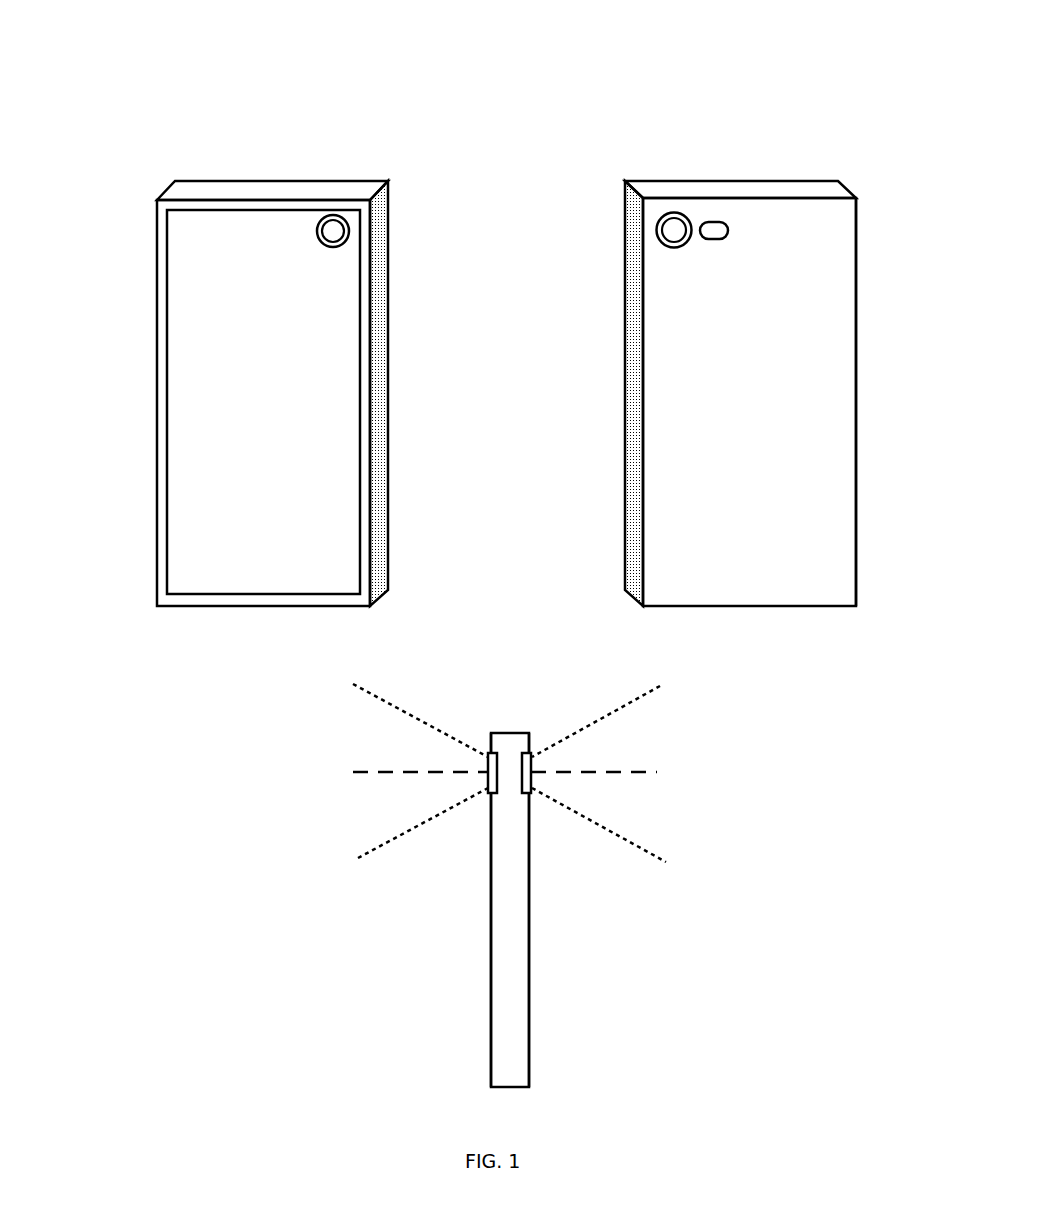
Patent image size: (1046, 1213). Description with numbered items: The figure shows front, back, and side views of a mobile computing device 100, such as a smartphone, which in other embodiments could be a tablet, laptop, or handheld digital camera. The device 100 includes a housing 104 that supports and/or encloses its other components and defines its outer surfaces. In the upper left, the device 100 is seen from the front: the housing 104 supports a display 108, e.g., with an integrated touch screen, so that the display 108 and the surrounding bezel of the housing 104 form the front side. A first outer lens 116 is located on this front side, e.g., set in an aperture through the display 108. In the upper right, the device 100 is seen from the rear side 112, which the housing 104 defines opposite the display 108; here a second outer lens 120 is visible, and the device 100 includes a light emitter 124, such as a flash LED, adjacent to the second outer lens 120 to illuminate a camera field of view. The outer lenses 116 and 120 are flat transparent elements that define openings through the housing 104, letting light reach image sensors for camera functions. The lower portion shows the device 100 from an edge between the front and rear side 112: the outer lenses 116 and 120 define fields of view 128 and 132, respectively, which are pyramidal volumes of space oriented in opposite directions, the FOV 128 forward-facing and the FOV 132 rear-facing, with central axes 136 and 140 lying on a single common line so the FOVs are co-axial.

The mobile computing device 100 is at (282, 150).
The housing 104 is at (198, 193).
The display 108 is at (207, 384).
The rear side 112 is at (833, 470).
The first outer lens 116 is at (333, 228).
The second outer lens 120 is at (674, 228).
The flash 124 is at (709, 222).
The field of view 128 is at (375, 848).
The field of view 132 is at (618, 832).
The central axis 136 is at (399, 785).
The central axis 140 is at (622, 781).